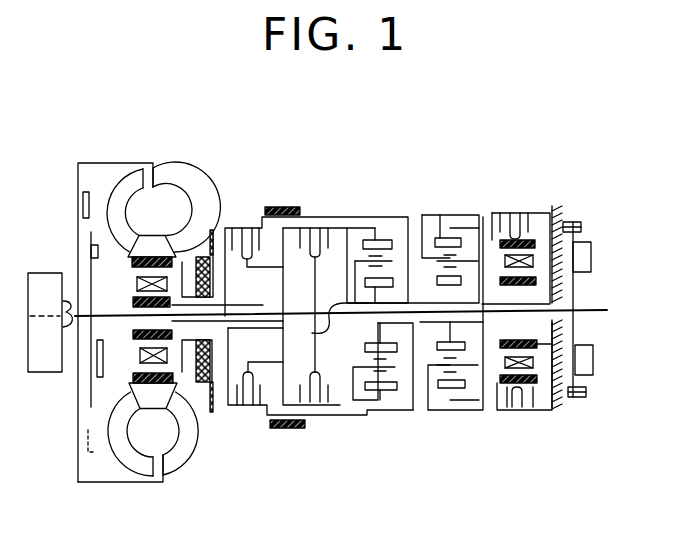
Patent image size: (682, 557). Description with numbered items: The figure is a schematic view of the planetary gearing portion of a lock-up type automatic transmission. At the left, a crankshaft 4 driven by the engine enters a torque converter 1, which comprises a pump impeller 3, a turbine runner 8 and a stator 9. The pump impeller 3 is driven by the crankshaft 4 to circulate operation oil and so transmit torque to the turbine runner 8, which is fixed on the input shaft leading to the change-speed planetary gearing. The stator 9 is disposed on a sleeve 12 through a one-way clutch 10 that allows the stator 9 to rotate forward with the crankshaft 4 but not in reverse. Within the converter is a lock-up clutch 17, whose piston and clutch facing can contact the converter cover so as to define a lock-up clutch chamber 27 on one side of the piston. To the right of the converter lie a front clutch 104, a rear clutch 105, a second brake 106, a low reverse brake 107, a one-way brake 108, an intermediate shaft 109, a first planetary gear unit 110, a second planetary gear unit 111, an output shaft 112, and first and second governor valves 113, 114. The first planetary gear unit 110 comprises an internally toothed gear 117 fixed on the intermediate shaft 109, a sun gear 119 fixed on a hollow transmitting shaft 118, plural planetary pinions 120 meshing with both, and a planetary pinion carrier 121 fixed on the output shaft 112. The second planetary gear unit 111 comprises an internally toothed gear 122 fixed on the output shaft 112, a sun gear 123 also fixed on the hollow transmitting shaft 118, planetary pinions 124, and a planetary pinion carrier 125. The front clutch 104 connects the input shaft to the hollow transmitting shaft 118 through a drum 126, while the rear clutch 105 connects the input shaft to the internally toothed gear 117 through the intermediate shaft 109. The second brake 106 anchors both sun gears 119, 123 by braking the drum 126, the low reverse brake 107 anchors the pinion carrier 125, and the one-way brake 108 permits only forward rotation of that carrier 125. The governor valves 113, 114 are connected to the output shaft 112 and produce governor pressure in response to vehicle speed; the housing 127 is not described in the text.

The torque converter 1 is at (188, 186).
The pump impeller 3 is at (196, 197).
The crankshaft 4 is at (50, 322).
The turbine runner 8 is at (130, 175).
The stator 9 is at (157, 240).
The one-way clutch 10 is at (137, 284).
The sleeve 12 is at (220, 305).
The lock-up clutch 17 is at (83, 218).
The lock-up clutch chamber 27 is at (90, 248).
The front clutch 104 is at (255, 228).
The rear clutch 105 is at (333, 222).
The second brake 106 is at (285, 207).
The low reverse brake 107 is at (508, 215).
The one-way brake 108 is at (535, 258).
The intermediate shaft 109 is at (283, 339).
The first planetary gear unit 110 is at (403, 216).
The second planetary gear unit 111 is at (440, 237).
The output shaft 112 is at (590, 308).
The first governor valve 113 is at (593, 350).
The second governor valve 114 is at (591, 257).
The internally toothed gear 117 is at (404, 196).
The hollow transmitting shaft 118 is at (422, 325).
The sun gear 119 is at (367, 282).
The planetary pinions 120 is at (364, 278).
The planetary pinion carrier 121 is at (328, 320).
The internally toothed gear 122 is at (460, 282).
The sun gear 123 is at (496, 182).
The planetary pinions 124 is at (494, 214).
The planetary pinion carrier 125 is at (421, 216).
The drum 126 is at (330, 228).
The transmission housing 127 is at (209, 405).